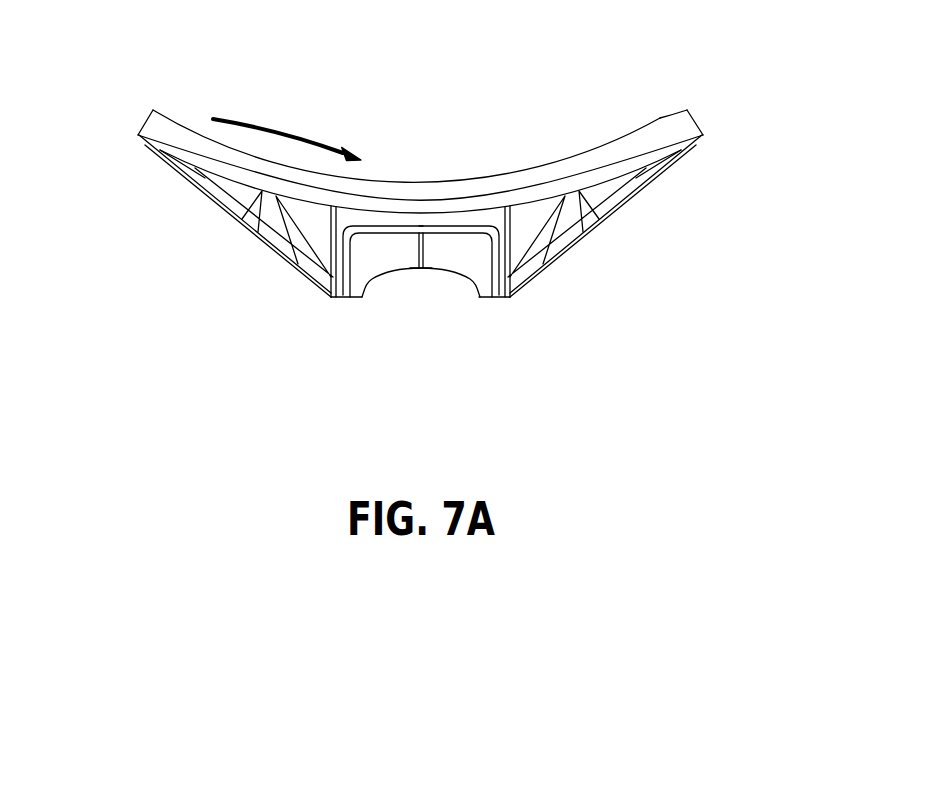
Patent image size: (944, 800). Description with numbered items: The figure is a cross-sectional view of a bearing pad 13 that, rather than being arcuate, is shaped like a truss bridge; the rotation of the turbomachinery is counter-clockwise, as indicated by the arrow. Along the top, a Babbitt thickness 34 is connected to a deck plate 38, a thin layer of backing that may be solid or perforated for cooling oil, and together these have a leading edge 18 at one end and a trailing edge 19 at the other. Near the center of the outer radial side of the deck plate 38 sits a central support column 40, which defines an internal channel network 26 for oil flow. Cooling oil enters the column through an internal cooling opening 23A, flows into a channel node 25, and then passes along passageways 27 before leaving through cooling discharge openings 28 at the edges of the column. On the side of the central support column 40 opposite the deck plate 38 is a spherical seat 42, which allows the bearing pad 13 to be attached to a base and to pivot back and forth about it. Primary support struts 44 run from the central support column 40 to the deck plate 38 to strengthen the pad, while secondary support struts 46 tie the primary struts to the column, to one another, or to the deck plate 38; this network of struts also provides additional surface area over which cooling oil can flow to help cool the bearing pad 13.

The bearing pad 13 is at (411, 218).
The leading edge 18 is at (137, 133).
The trailing edge 19 is at (697, 120).
The Babbitt thickness 34 is at (585, 160).
The deck plate 38 is at (696, 126).
The passageway 27 is at (333, 253).
The primary support struts 44 is at (222, 196).
The secondary support struts 46 is at (207, 177).
The cooling discharge opening 28 is at (340, 297).
The central support column 40 is at (465, 268).
The channel node 25 is at (423, 252).
The spherical seat 42 is at (383, 291).
The internal cooling opening 23A is at (420, 270).
The internal channel network 26 is at (422, 224).